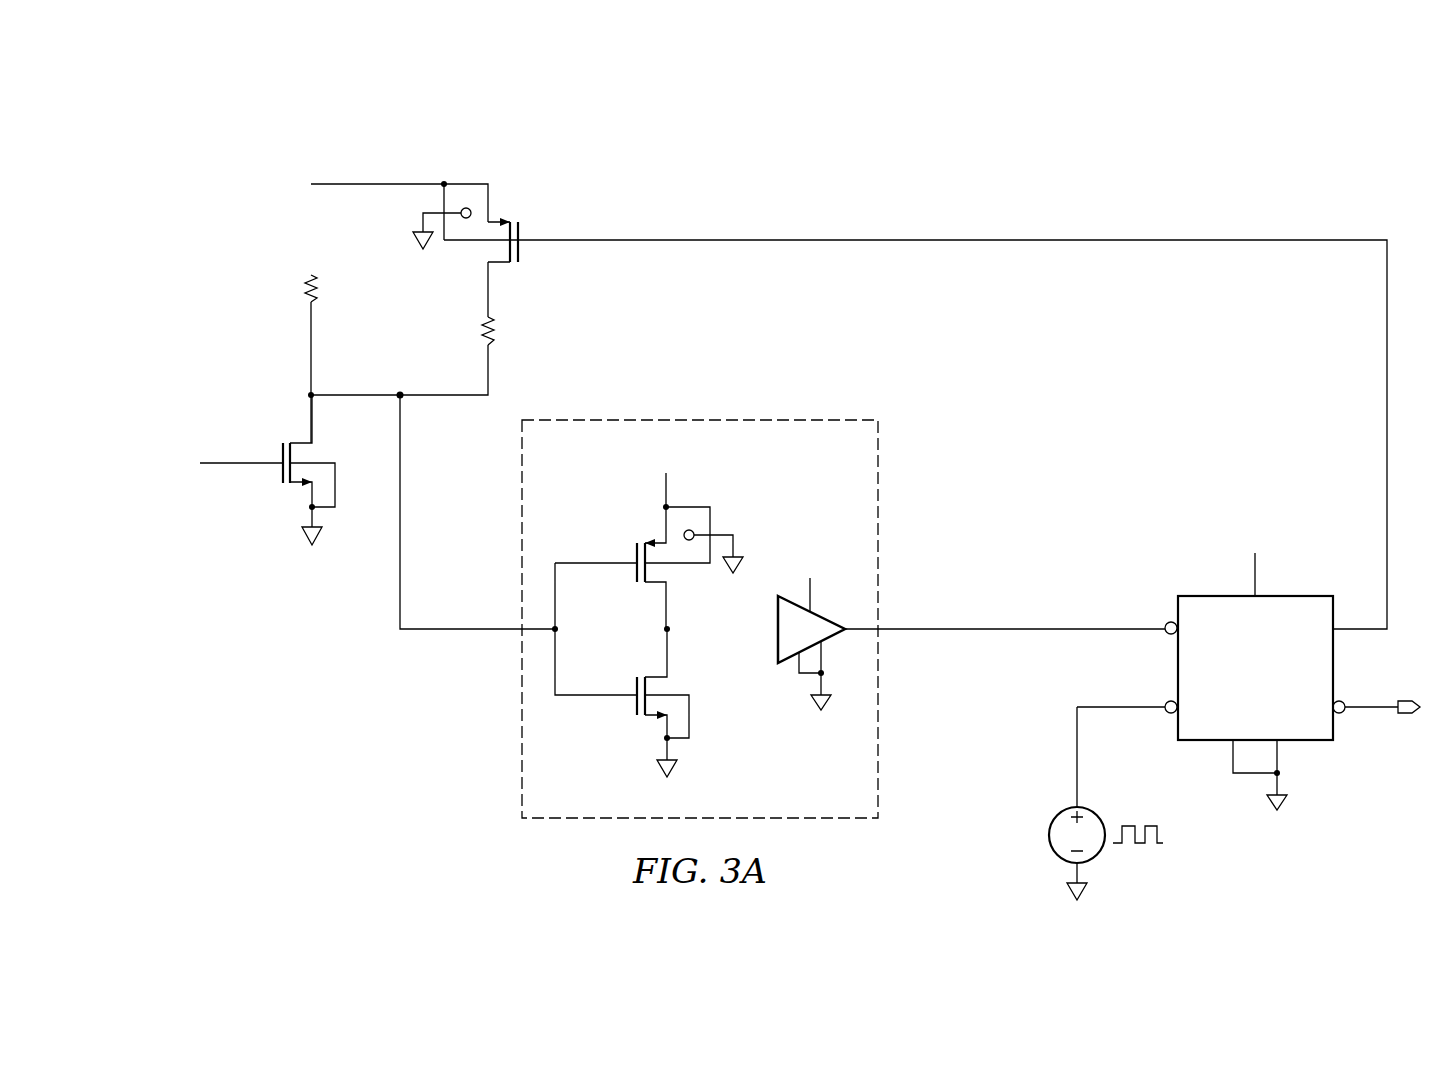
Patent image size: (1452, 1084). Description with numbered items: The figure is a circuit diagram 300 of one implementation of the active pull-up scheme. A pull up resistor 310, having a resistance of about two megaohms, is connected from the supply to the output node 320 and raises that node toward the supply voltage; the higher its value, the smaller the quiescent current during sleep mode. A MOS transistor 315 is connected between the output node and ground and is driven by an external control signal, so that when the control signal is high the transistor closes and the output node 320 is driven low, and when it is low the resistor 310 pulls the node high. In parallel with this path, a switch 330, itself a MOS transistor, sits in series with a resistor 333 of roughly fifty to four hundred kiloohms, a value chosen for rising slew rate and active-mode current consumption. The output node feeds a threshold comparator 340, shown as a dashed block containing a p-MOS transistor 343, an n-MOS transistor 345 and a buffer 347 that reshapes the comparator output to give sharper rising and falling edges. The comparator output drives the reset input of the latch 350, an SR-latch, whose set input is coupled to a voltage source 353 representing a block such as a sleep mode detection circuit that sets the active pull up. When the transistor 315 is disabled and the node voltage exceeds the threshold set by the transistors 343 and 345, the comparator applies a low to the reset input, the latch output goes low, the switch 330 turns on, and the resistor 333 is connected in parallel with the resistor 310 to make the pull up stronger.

The circuit diagram 300 is at (1170, 156).
The pull up resistor 310 is at (305, 284).
The MOS transistor 315 is at (283, 478).
The output node 320 is at (401, 398).
The switch 330 is at (520, 254).
The resistor 333 is at (484, 328).
The comparator 340 is at (512, 734).
The p-MOS transistor 343 is at (637, 577).
The n-MOS transistor 345 is at (637, 709).
The buffer 347 is at (776, 646).
The latch 350 is at (1303, 596).
The voltage source 353 is at (1057, 812).